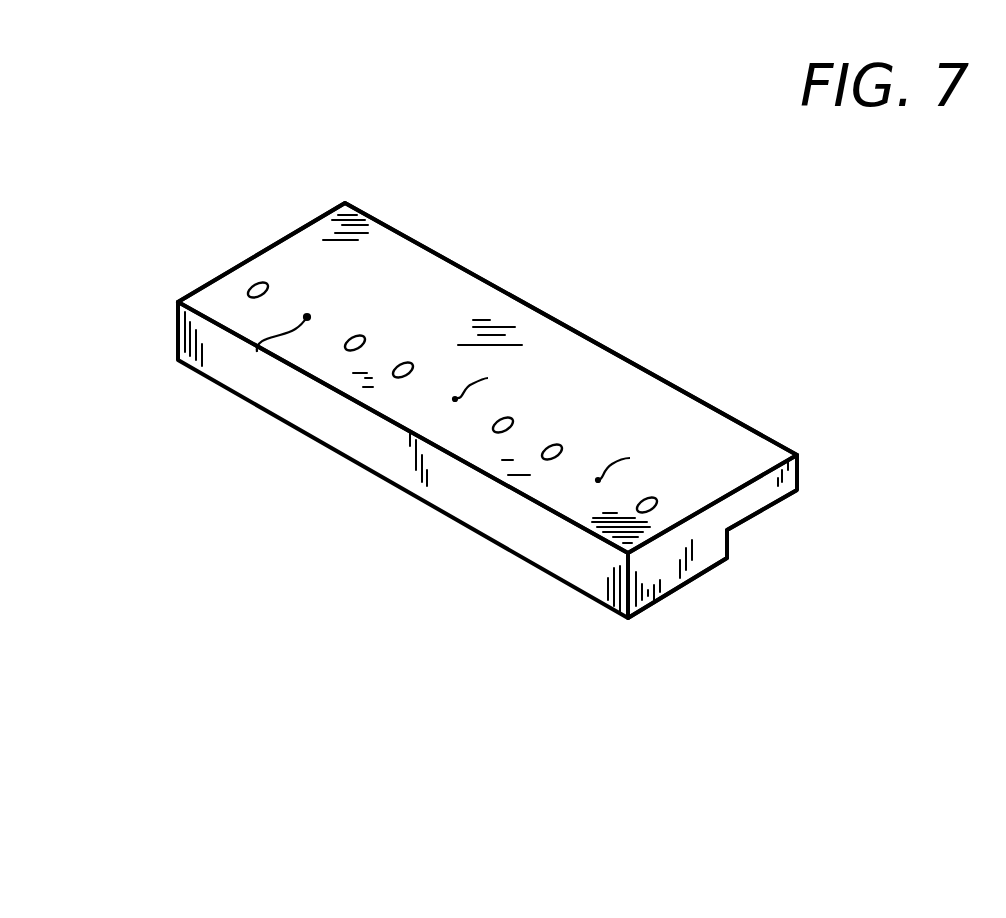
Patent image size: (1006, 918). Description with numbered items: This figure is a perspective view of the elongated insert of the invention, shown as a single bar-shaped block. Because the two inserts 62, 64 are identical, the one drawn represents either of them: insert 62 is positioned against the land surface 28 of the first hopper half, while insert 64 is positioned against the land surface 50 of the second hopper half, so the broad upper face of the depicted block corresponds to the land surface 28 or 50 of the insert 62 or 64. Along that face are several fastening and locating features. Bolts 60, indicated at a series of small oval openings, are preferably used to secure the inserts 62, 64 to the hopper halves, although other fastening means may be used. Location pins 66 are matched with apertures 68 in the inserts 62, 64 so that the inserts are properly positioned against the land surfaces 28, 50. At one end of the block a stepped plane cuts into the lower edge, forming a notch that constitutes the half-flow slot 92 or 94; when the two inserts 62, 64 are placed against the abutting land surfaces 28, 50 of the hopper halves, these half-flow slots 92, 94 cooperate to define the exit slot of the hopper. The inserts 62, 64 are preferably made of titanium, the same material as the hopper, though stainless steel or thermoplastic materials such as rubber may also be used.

The land surface 28 is at (552, 421).
The land surface 50 is at (552, 421).
The bolts 60 is at (262, 281).
The insert 62 is at (487, 378).
The insert 64 is at (578, 332).
The location pins 66 is at (350, 293).
The apertures 68 is at (459, 398).
The half-flow slot 92 is at (777, 554).
The half-flow slot 94 is at (755, 515).